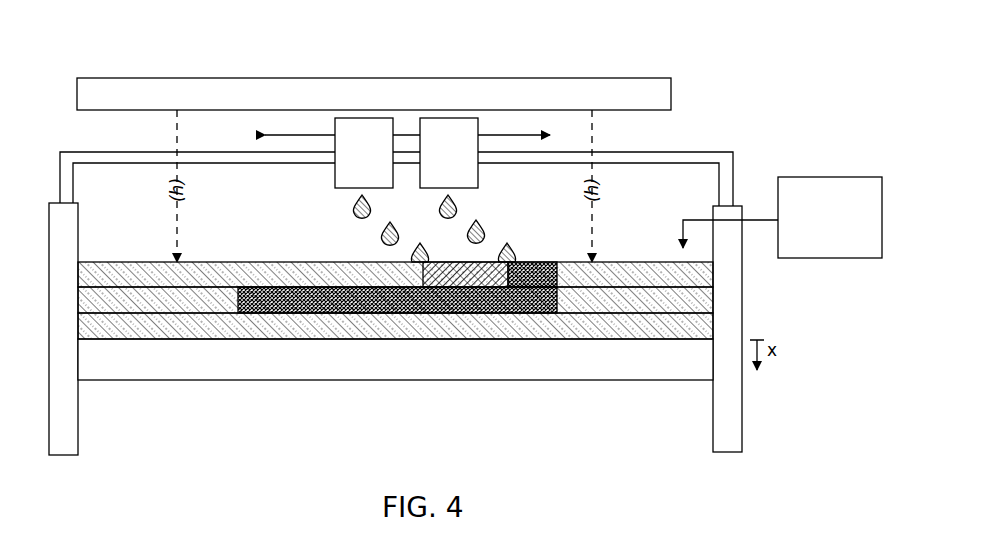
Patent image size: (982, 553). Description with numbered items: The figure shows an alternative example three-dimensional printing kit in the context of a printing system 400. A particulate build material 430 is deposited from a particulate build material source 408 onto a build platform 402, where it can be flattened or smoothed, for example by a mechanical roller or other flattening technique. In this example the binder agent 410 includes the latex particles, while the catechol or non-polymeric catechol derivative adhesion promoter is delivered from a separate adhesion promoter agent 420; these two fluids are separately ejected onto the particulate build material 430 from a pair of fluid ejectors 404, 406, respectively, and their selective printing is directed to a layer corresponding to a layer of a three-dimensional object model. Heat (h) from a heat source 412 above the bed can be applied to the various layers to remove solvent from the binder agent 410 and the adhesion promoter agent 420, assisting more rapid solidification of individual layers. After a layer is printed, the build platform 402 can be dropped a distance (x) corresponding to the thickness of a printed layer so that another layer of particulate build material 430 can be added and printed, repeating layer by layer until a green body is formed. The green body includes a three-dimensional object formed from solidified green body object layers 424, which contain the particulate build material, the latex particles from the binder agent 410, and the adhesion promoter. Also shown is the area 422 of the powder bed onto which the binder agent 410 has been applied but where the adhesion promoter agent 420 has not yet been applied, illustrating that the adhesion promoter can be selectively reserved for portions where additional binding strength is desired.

The three-dimensional printing kit in a printing system 400 is at (120, 44).
The build platform 402 is at (556, 352).
The fluid ejector 404 is at (364, 153).
The fluid ejector 406 is at (449, 153).
The particulate build material source 408 is at (782, 217).
The binder agent 410 is at (355, 209).
The heat source 412 is at (374, 94).
The adhesion promoter agent 420 is at (487, 238).
The area of the powder bed with binder agent applied 422 is at (447, 292).
The solidified green body object layers 424 is at (530, 290).
The particulate build material 430 is at (140, 297).